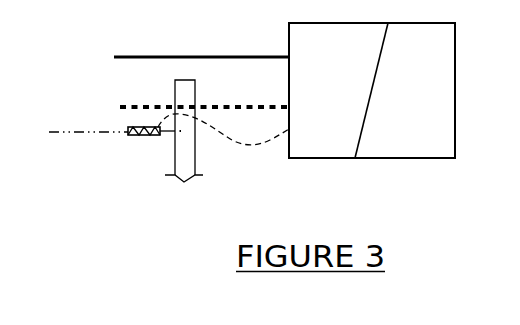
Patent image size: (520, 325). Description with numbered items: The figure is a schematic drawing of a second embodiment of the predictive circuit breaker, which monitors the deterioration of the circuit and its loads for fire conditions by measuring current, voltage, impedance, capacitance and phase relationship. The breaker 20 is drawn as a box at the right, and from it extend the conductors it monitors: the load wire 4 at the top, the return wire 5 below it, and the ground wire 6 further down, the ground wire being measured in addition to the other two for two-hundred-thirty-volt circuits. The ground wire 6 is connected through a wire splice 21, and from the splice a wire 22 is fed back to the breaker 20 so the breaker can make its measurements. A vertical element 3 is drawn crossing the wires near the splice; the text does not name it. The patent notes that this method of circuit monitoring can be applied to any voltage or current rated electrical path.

The support pillar / tower 3 is at (195, 160).
The load wire 4 is at (150, 57).
The return wire 5 is at (143, 106).
The ground wire 6 is at (78, 132).
The breaker 20 is at (455, 100).
The wire splice 21 is at (140, 135).
The wire 22 is at (245, 143).